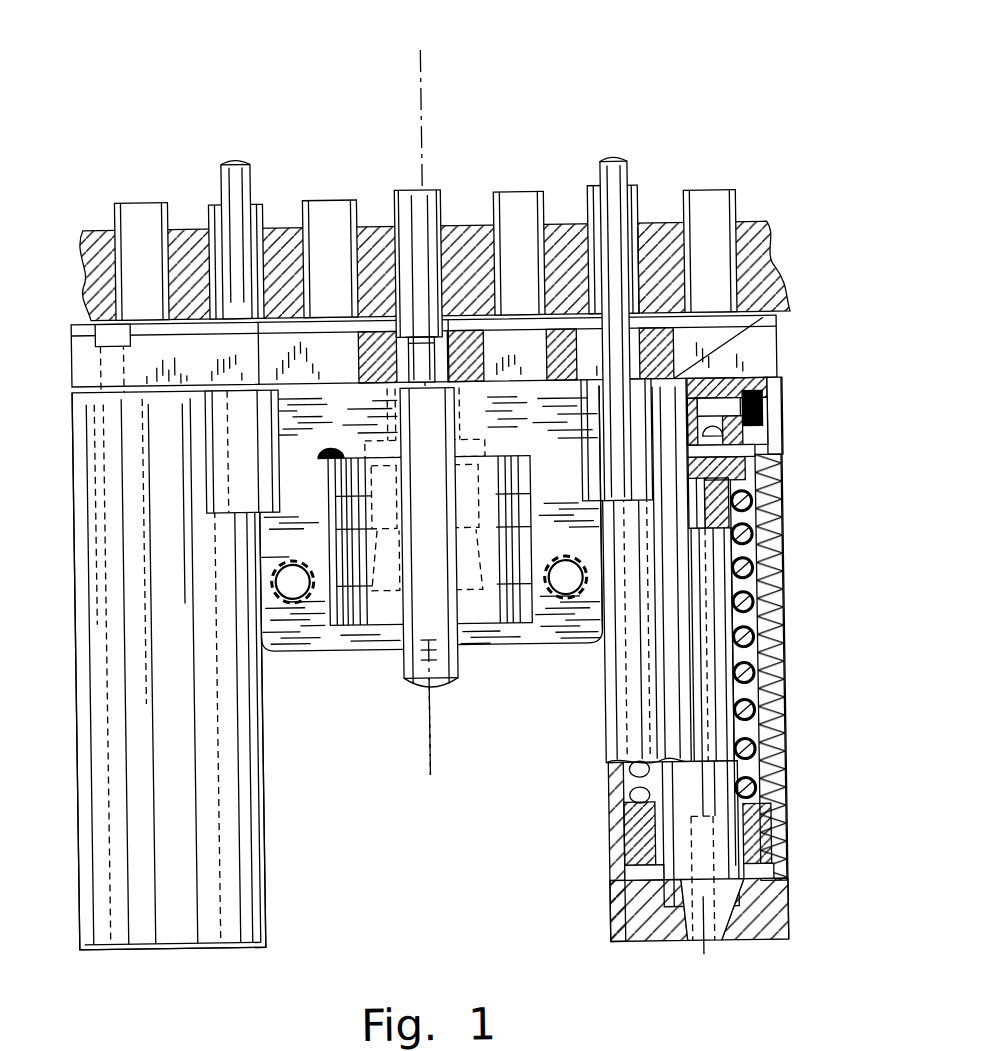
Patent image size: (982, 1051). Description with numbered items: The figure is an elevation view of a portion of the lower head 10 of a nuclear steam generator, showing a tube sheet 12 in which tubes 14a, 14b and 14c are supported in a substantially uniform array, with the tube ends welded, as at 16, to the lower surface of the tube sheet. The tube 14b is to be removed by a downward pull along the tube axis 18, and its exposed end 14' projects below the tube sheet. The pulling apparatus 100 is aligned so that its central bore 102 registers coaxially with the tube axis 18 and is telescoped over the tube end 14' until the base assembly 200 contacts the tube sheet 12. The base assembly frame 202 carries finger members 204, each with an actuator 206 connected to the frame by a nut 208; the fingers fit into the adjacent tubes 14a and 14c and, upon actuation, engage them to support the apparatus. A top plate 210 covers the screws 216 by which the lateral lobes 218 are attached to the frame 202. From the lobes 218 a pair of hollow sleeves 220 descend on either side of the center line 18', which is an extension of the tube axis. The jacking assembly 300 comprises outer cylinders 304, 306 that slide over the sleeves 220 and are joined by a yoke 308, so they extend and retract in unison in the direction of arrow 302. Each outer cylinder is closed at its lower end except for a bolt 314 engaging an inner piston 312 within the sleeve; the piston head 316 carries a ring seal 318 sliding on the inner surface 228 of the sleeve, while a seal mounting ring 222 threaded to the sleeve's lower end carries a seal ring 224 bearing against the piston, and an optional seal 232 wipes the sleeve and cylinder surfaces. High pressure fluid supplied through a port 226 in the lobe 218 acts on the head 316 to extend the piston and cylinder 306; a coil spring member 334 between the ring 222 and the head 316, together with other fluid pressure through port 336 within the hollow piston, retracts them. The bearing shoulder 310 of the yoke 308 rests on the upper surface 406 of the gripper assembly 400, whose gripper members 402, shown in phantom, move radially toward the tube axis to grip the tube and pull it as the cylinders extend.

The lower head 10 is at (212, 88).
The tube sheet 12 is at (92, 300).
The tube 14a is at (222, 200).
The tube 14b is at (405, 195).
The tube 14c is at (646, 230).
The tube end 14' is at (382, 556).
The weld 16 is at (118, 320).
The tube axis 18 is at (450, 412).
The center line 18' is at (387, 720).
The apparatus 100 is at (70, 540).
The central bore 102 is at (456, 320).
The base assembly 200 is at (70, 358).
The frame 202 is at (782, 331).
The finger member 204 is at (568, 320).
The actuator 206 is at (782, 294).
The nut 208 is at (650, 270).
The top plate 210 is at (266, 320).
The screw 216 is at (104, 403).
The lateral lobe 218 is at (758, 450).
The sleeve 220 is at (780, 590).
The seal mounting ring 222 is at (772, 842).
The seal ring 224 is at (768, 820).
The fluid input port 226 is at (768, 415).
The inner surface 228 is at (758, 624).
The seal 232 is at (775, 476).
The jacking assembly 300 is at (76, 716).
The arrow 302 is at (823, 394).
The outer cylinder 304 is at (262, 878).
The outer cylinder 306 is at (604, 764).
The yoke 308 is at (596, 648).
The bearing shoulder 310 is at (294, 431).
The piston 312 is at (768, 706).
The bolt 314 is at (718, 945).
The piston head 316 is at (774, 462).
The ring seal 318 is at (782, 496).
The coil spring member 334 is at (762, 640).
The port 336 is at (712, 880).
The gripper assembly 400 is at (360, 638).
The gripper member 402 is at (484, 628).
The upper surface 406 is at (320, 452).